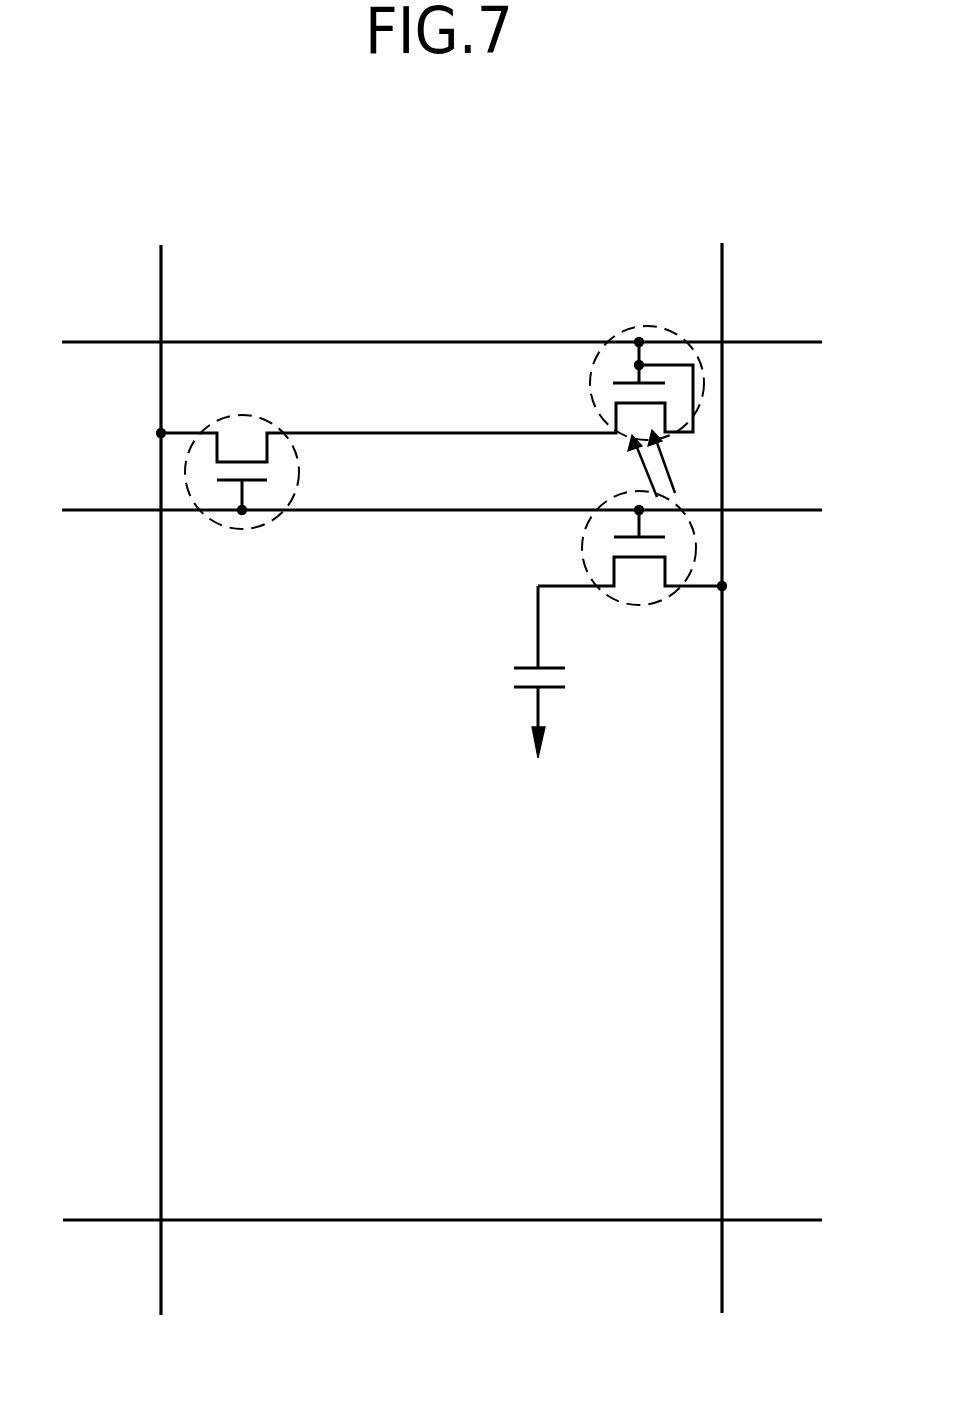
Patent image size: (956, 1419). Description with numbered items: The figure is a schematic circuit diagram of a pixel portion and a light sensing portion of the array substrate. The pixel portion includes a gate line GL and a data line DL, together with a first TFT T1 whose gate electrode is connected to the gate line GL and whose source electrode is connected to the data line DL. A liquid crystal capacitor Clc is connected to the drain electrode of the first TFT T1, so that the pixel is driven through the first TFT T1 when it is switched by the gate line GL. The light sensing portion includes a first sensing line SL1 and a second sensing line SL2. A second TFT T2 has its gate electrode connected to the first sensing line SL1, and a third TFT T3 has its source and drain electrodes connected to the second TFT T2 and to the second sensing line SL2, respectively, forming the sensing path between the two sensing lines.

The first sensing line SL1 is at (110, 344).
The second sensing line SL2 is at (161, 292).
The gate line GL is at (108, 512).
The data line DL is at (722, 288).
The first TFT T1 is at (653, 607).
The second TFT T2 is at (603, 340).
The third TFT T3 is at (290, 443).
The liquid crystal capacitor Clc is at (510, 672).